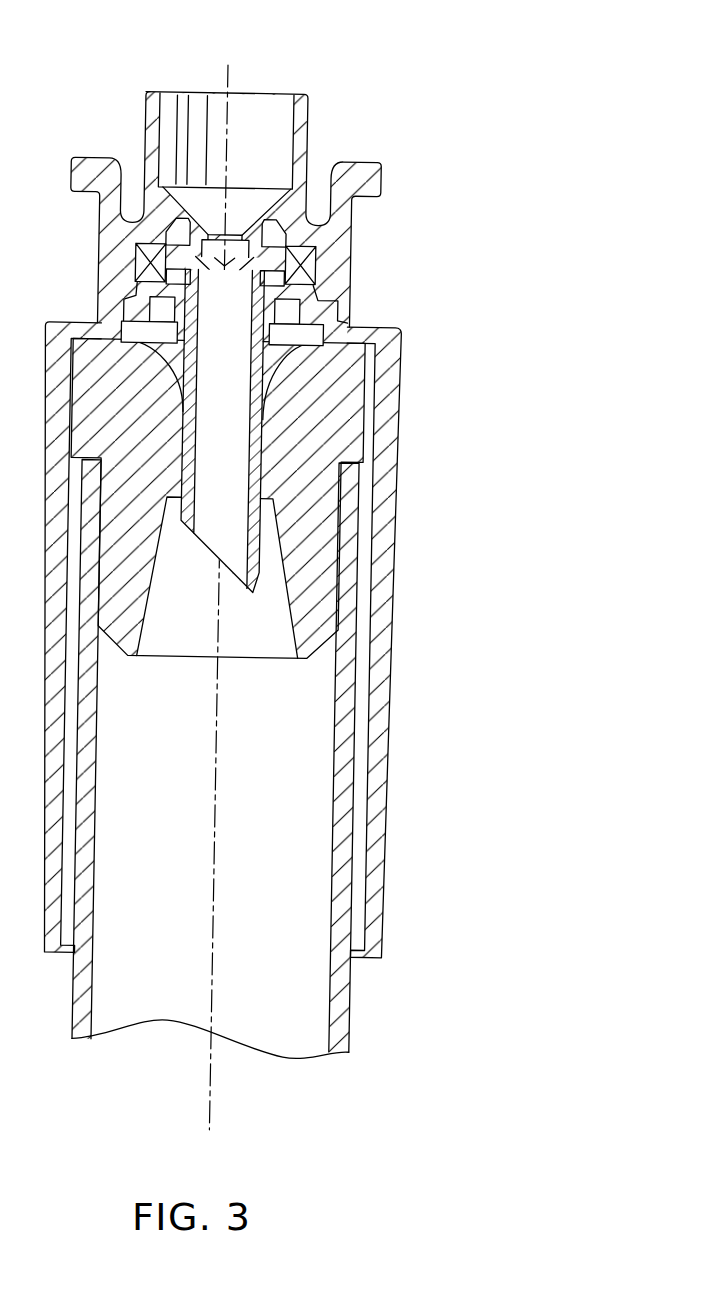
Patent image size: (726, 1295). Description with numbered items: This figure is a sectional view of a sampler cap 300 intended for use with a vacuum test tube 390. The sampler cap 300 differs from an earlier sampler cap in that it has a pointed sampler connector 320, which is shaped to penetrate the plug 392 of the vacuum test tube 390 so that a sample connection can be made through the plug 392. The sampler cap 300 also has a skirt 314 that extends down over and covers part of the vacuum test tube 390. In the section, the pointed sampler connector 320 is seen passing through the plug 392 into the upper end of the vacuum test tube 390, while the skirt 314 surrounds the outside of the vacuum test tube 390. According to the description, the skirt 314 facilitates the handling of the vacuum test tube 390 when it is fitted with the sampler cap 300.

The sampler cap 300 is at (430, 68).
The skirt 314 is at (383, 613).
The pointed sampler connector 320 is at (235, 520).
The vacuum test tube 390 is at (338, 884).
The plug 392 is at (333, 437).